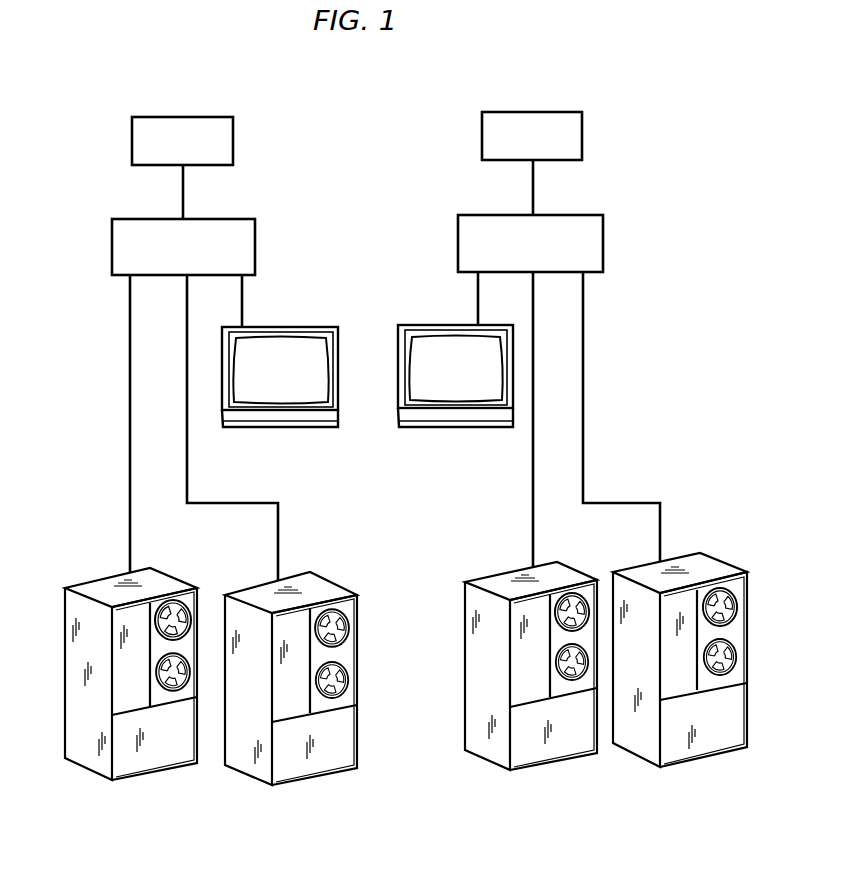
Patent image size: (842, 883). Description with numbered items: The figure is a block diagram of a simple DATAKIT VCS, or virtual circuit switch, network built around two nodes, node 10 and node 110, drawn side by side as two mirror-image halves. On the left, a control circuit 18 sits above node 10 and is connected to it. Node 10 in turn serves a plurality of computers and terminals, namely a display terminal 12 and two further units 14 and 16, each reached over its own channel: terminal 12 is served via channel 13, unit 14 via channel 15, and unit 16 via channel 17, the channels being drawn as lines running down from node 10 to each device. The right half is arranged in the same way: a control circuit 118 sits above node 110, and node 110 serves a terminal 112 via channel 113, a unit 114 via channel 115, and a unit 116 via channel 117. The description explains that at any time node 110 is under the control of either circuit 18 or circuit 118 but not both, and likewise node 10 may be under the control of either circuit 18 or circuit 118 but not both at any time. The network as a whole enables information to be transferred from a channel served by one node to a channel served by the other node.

The node 10 is at (237, 218).
The computer or terminal 12 is at (307, 325).
The channel 13 is at (242, 307).
The computer or terminal 14 is at (257, 785).
The channel 15 is at (185, 388).
The computer or terminal 16 is at (113, 780).
The channel 17 is at (128, 394).
The control circuit 18 is at (225, 116).
The node 110 is at (575, 215).
The computer or terminal 112 is at (415, 323).
The channel 113 is at (478, 298).
The computer or terminal 114 is at (485, 755).
The channel 115 is at (538, 422).
The computer or terminal 116 is at (642, 753).
The channel 117 is at (585, 408).
The control circuit 118 is at (513, 112).